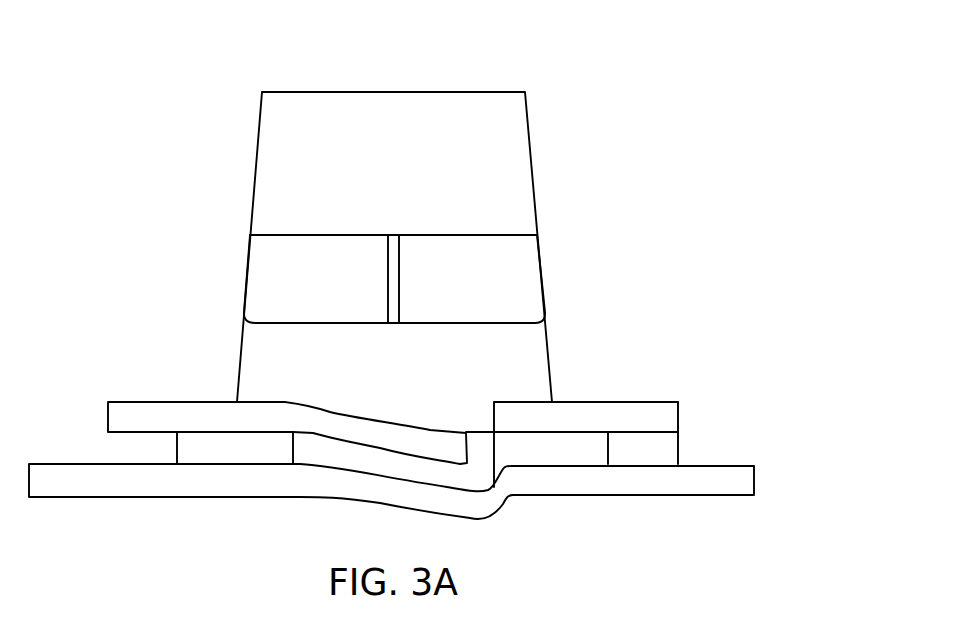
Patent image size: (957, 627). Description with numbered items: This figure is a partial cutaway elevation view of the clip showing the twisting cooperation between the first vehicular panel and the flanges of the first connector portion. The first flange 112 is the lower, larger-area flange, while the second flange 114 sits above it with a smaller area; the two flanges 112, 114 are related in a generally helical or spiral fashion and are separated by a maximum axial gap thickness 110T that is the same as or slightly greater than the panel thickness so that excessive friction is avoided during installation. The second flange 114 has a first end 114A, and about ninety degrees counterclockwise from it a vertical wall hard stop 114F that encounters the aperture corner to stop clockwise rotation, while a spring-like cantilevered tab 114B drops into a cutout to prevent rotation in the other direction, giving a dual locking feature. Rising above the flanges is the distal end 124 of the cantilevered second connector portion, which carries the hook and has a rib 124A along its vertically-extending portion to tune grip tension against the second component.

The first flange 112 is at (200, 478).
The second flange 114 is at (116, 417).
The first end of the second flange 114A is at (515, 412).
The spring-like cantilevered tab 114B is at (447, 441).
The vertical wall hard stop 114F is at (663, 455).
The distal end 124 is at (522, 284).
The rib 124A is at (400, 297).
The maximum axial gap thickness 110T is at (682, 432).